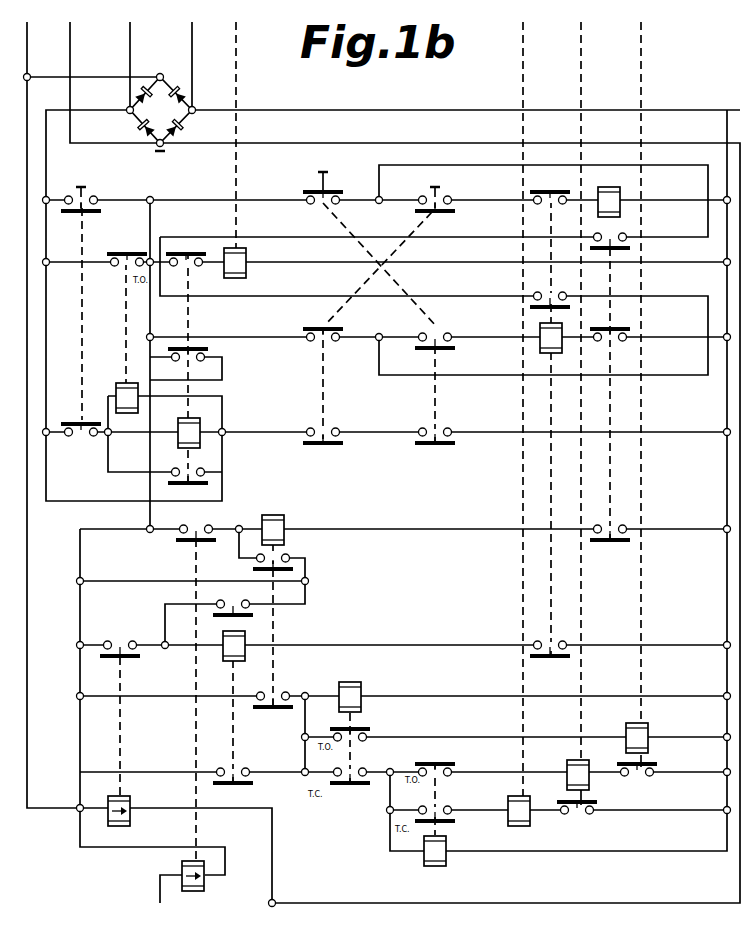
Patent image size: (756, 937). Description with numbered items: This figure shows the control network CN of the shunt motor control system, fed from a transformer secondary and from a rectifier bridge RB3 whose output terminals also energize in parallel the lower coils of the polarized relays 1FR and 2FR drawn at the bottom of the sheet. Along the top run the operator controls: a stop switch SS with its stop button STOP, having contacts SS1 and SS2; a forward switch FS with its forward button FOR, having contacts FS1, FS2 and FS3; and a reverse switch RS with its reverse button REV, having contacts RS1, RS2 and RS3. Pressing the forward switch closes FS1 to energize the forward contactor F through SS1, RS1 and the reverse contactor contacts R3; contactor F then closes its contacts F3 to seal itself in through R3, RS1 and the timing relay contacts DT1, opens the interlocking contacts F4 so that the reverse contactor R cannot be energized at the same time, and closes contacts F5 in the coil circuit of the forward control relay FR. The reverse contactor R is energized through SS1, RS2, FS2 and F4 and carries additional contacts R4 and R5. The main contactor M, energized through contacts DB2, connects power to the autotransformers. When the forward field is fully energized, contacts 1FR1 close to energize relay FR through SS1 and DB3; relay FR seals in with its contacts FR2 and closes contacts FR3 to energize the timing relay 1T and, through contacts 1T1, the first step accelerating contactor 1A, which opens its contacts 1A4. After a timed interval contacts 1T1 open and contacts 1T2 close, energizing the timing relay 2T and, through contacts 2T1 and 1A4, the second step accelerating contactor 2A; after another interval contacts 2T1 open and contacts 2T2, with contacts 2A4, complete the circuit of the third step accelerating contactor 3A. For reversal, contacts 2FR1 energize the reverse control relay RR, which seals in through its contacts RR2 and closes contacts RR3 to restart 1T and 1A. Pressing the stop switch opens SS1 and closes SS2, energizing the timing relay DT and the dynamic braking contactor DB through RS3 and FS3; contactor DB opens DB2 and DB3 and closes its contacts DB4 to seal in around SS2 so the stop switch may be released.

The rectifier bridge RB3 is at (170, 117).
The stop push button STOP is at (89, 188).
The stop switch contacts SS1 is at (100, 200).
The control network CN is at (214, 189).
The stop switch SS is at (79, 240).
The timing relay contacts DT1 is at (112, 274).
The dynamic braking contactor contacts DB2 is at (196, 270).
The main contactor M is at (250, 258).
The forward push button FOR is at (324, 174).
The forward switch contacts FS1 is at (300, 198).
The reverse push button REV is at (435, 190).
The reverse switch contacts RS1 is at (452, 199).
The forward switch FS is at (347, 230).
The reverse switch RS is at (436, 232).
The reverse contactor contacts R3 is at (545, 207).
The forward contactor F is at (614, 191).
The forward contactor contacts F3 is at (615, 236).
The reverse contactor contacts R4 is at (553, 296).
The reverse contactor R is at (556, 352).
The interlocking contacts F4 is at (612, 348).
The forward switch contacts FS2 is at (447, 333).
The reverse switch contacts RS2 is at (330, 344).
The reverse switch contacts RS3 is at (329, 432).
The forward switch contacts FS3 is at (442, 432).
The timing relay DT is at (118, 384).
The dynamic braking contactor contacts DB3 is at (177, 360).
The stop switch contacts SS2 is at (78, 433).
The dynamic braking contactor DB is at (203, 442).
The dynamic braking contactor contacts DB4 is at (198, 470).
The polarized relay contacts 1FR1 is at (201, 526).
The forward control relay FR is at (290, 521).
The forward control relay contacts FR2 is at (291, 556).
The reverse control relay contacts RR2 is at (234, 602).
The polarized relay contacts 2FR1 is at (121, 638).
The reverse control relay RR is at (244, 638).
The forward control relay contacts FR3 is at (281, 692).
The timing relay 1T is at (363, 688).
The timing relay contacts 1T1 is at (361, 743).
The timing relay contacts 1T2 is at (336, 770).
The timing relay contacts 2T1 is at (446, 774).
The timing relay contacts 2T2 is at (428, 806).
The timing relay 2T is at (450, 848).
The forward contactor contacts F5 is at (610, 526).
The reverse contactor contacts R5 is at (552, 642).
The first step accelerating contactor 1A is at (648, 730).
The second step accelerating contactor 2A is at (582, 760).
The accelerating contactor contacts 1A4 is at (642, 780).
The accelerating contactor contacts 2A4 is at (577, 814).
The third step accelerating contactor 3A is at (528, 826).
The reverse control relay contacts RR3 is at (244, 765).
The polarized relay 2FR is at (135, 796).
The polarized relay 1FR is at (176, 873).